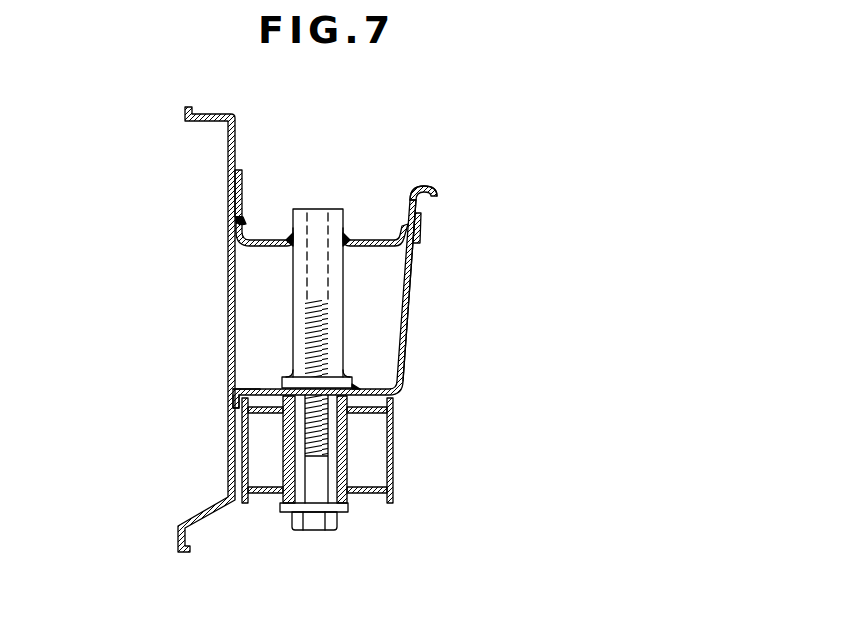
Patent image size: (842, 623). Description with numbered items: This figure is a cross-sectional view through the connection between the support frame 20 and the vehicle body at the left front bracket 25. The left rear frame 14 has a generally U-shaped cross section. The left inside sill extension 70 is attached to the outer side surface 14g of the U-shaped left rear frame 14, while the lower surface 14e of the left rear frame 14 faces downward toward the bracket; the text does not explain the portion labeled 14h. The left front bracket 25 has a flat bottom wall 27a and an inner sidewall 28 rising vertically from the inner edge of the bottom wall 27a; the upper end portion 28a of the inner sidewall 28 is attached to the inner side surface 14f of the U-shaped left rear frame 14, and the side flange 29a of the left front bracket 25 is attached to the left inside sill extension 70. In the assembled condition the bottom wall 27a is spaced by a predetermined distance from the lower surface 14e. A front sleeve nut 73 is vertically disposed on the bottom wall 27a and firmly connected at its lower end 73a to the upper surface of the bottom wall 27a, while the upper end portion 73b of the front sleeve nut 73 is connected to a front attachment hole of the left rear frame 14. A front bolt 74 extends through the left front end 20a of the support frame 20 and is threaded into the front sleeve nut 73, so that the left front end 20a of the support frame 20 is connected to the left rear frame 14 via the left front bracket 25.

The left rear frame 14 is at (425, 188).
The lower surface of the left rear frame 14e is at (263, 249).
The inner side surface of the left rear frame 14f is at (418, 227).
The outer side surface of the left rear frame 14g is at (236, 187).
The cylindrical portion 14h is at (334, 233).
The support frame 20 is at (398, 449).
The left front end of the support frame 20a is at (397, 465).
The left front bracket 25 is at (412, 317).
The bottom wall 27a is at (244, 440).
The inner sidewall 28 is at (404, 345).
The upper end portion of the inner sidewall 28a is at (420, 217).
The side flange 29a is at (246, 383).
The left inside sill extension 70 is at (228, 296).
The front sleeve nut 73 is at (296, 312).
The lower end of the front sleeve nut 73a is at (345, 361).
The upper end portion of the front sleeve nut 73b is at (237, 215).
The front bolt 74 is at (315, 496).